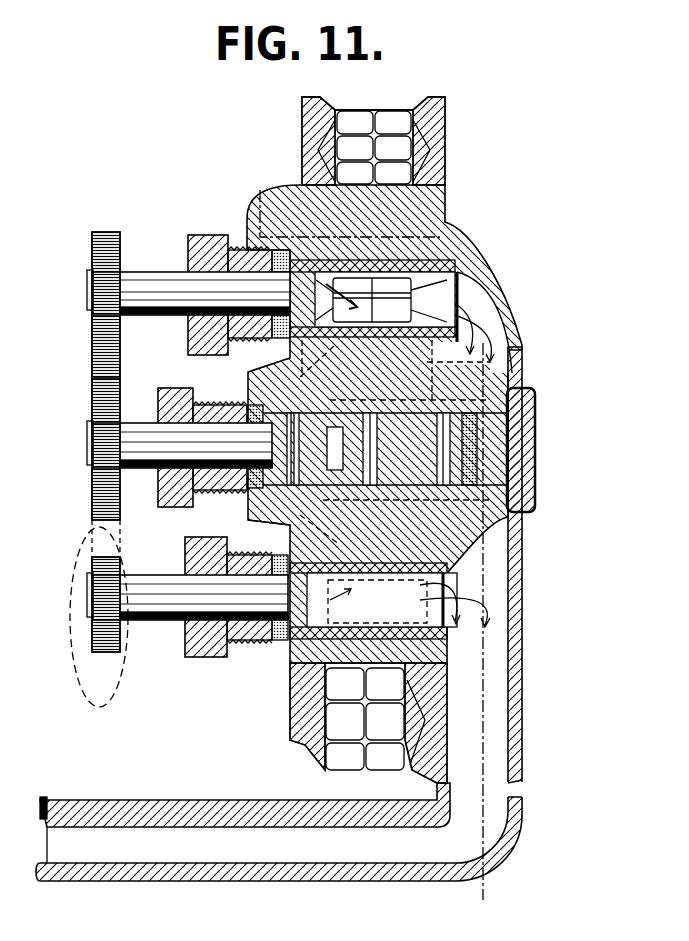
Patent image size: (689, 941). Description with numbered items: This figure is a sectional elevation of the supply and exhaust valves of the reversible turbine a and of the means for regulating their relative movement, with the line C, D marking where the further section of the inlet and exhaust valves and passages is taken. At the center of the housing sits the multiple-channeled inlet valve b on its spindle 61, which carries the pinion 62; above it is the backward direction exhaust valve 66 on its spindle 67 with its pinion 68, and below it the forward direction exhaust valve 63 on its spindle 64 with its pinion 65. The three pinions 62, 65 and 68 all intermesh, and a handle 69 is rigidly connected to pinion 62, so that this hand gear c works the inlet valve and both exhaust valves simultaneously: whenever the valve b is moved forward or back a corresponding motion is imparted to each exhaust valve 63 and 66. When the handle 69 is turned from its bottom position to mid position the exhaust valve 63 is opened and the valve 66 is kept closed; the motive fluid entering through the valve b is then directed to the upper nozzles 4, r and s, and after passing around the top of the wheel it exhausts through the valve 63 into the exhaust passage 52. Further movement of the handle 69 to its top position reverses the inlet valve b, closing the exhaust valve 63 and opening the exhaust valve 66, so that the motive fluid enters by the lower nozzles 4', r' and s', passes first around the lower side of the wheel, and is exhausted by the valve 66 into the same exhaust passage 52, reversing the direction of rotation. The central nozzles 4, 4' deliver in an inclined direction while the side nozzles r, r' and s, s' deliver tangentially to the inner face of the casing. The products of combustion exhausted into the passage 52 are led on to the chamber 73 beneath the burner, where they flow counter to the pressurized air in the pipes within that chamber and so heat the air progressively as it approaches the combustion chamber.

The pinion 68 is at (92, 254).
The spindle 67 is at (148, 284).
The backward direction exhaust valve 66 is at (437, 267).
The intermediate peripheral delivery nozzle 4 is at (485, 327).
The side delivery nozzle r is at (493, 386).
The inlet valve b is at (477, 450).
The side delivery nozzle s is at (248, 365).
The side delivery nozzle s' is at (240, 513).
The pinion 62 is at (90, 488).
The spindle 61 is at (143, 455).
The hand gear c is at (90, 393).
The pinion 65 is at (83, 588).
The spindle 64 is at (168, 617).
The handle 69 is at (118, 693).
The forward direction exhaust valve 63 is at (447, 632).
The intermediate peripheral delivery nozzle 4' is at (472, 549).
The side delivery nozzle r' is at (528, 526).
The exhaust passage 52 is at (470, 723).
The chamber 73 is at (247, 833).
The section line C, D C is at (345, 196).
The section line C D is at (477, 634).
The turbine a is at (537, 785).